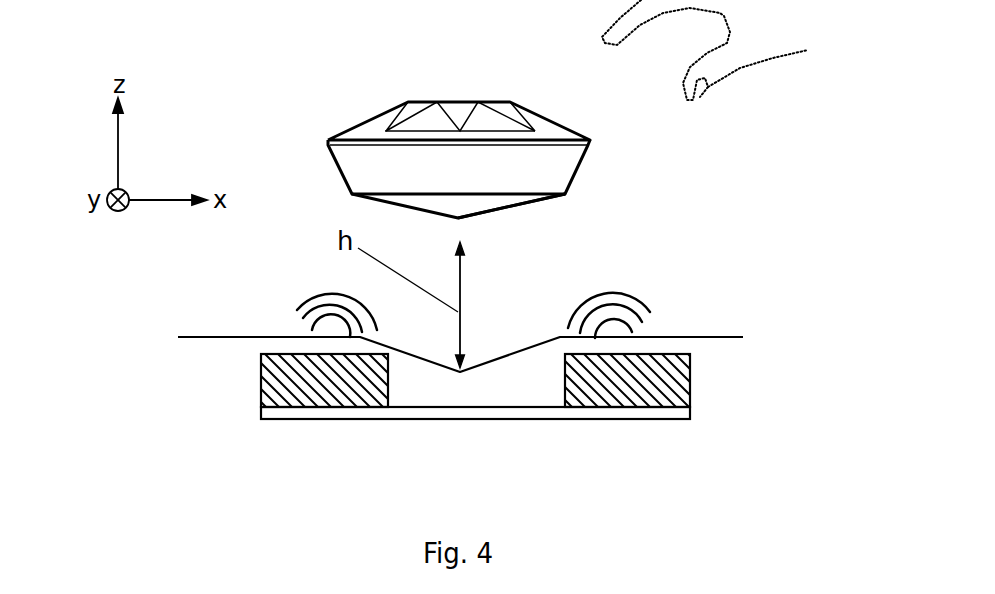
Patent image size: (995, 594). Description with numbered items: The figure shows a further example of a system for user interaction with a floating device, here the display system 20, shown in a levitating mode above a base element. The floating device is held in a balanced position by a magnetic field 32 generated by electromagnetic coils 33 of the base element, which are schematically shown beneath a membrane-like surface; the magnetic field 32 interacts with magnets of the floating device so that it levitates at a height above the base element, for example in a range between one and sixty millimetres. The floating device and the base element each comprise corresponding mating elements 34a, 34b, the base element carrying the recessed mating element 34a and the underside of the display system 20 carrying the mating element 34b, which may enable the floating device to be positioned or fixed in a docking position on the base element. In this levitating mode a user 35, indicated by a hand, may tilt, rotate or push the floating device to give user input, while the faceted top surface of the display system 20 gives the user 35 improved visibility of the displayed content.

The display system 20 is at (355, 58).
The magnetic field 32 is at (298, 288).
The electromagnetic coils 33 is at (232, 385).
The mating element 34a is at (490, 361).
The mating element 34b is at (502, 210).
The user 35 is at (798, 32).